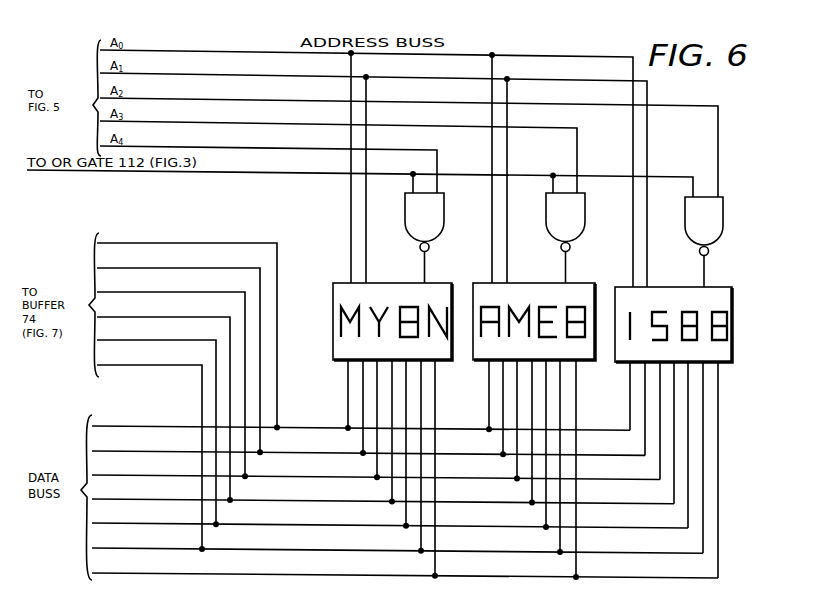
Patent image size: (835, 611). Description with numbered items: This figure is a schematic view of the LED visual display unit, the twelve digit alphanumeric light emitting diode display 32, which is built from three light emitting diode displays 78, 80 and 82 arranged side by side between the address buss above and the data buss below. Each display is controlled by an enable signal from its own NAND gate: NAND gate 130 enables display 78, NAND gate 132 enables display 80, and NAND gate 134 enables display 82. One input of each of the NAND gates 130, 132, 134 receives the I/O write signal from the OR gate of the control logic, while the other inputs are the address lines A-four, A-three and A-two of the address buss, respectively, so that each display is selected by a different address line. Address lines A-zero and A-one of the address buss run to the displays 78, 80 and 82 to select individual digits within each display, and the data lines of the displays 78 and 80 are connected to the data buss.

The twelve digit alphanumeric light emitting diode display 32 is at (748, 310).
The light emitting diode display 78 is at (391, 297).
The light emitting diode display 80 is at (530, 299).
The light emitting diode display 82 is at (668, 302).
The NAND gate 130 is at (417, 219).
The NAND gate 132 is at (567, 216).
The NAND gate 134 is at (707, 222).